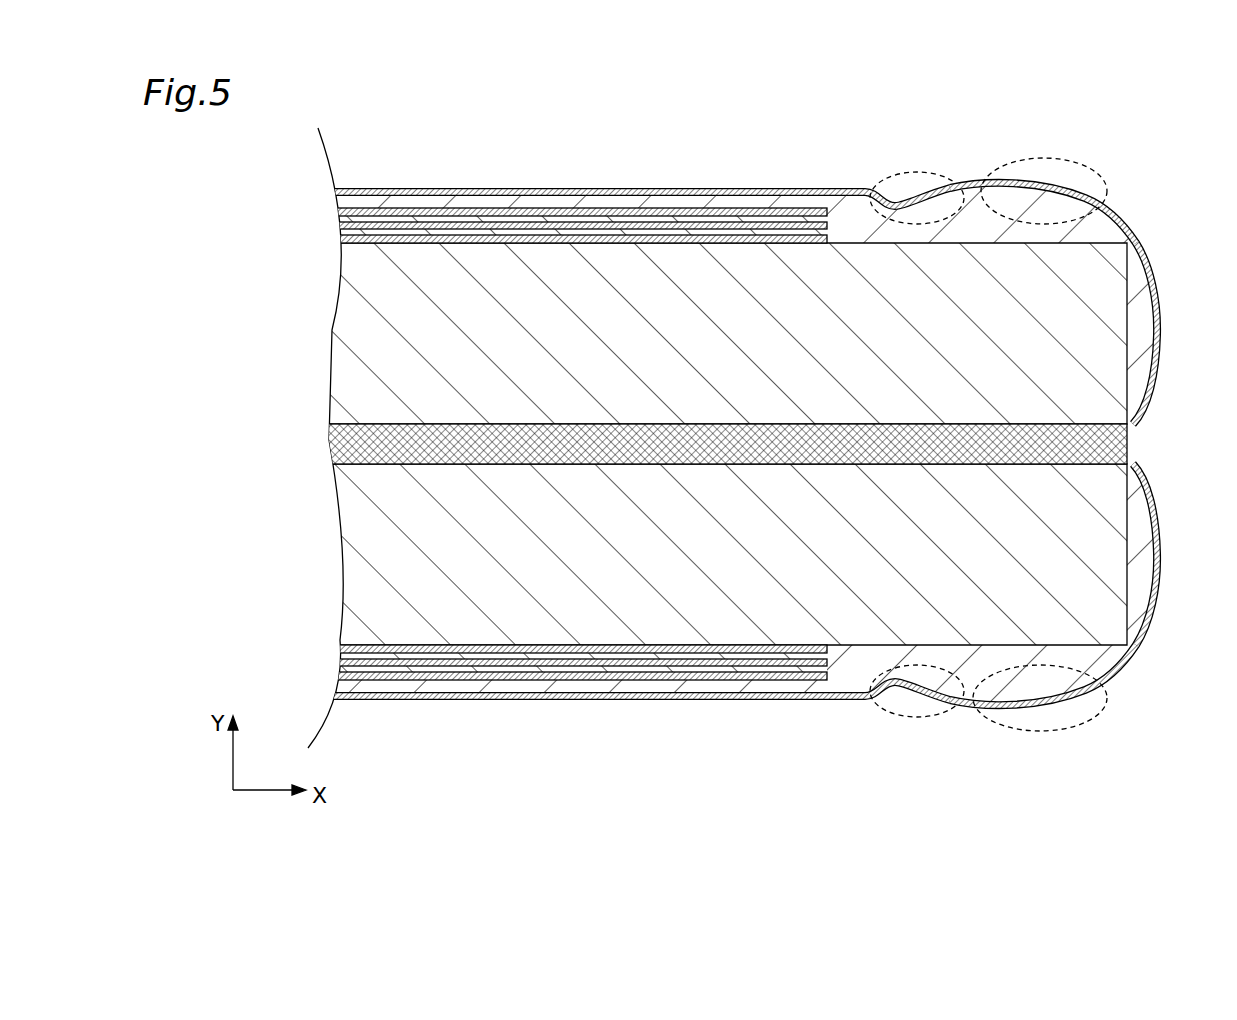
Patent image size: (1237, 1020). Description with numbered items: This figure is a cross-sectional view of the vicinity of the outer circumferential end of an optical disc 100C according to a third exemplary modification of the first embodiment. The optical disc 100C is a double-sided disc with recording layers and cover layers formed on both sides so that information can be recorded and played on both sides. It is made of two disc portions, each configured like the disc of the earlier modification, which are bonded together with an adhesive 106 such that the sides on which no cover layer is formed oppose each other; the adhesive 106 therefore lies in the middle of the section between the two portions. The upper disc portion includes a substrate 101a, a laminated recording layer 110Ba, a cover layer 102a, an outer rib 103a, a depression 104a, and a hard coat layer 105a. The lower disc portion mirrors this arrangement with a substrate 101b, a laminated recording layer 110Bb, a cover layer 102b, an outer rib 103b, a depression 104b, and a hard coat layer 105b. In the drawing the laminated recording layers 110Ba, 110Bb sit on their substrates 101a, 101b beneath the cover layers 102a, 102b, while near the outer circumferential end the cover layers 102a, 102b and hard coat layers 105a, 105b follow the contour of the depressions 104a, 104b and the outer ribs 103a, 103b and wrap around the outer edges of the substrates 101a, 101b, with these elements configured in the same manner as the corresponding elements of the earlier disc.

The optical disc 100C is at (1200, 94).
The substrate 101a is at (370, 328).
The substrate 101b is at (370, 556).
The cover layer 102a is at (852, 222).
The cover layer 102b is at (847, 660).
The outer rib 103a is at (1042, 158).
The outer rib 103b is at (1042, 732).
The depression 104a is at (915, 170).
The depression 104b is at (913, 717).
The hard coat layer 105a is at (1197, 257).
The hard coat layer 105b is at (1152, 614).
The adhesive 106 is at (358, 442).
The laminated recording layer 110Ba is at (477, 210).
The laminated recording layer 110Bb is at (477, 680).